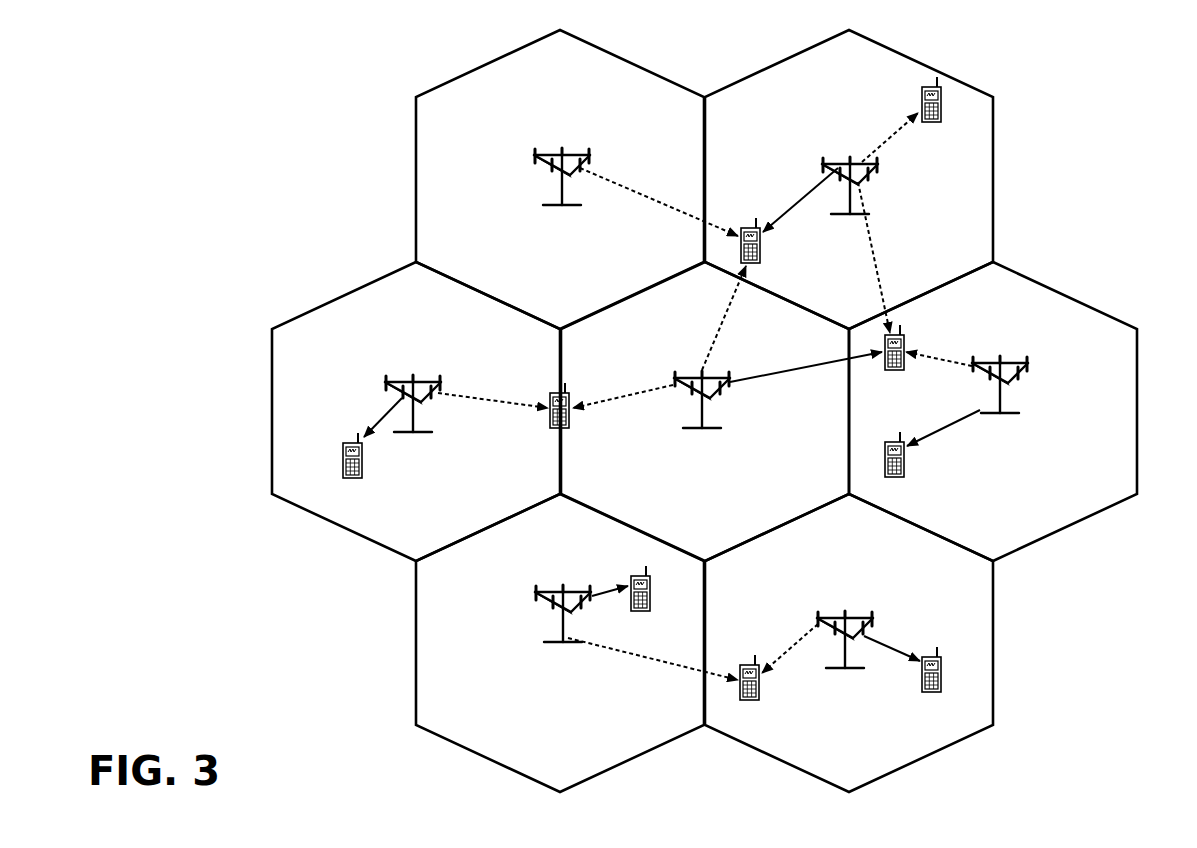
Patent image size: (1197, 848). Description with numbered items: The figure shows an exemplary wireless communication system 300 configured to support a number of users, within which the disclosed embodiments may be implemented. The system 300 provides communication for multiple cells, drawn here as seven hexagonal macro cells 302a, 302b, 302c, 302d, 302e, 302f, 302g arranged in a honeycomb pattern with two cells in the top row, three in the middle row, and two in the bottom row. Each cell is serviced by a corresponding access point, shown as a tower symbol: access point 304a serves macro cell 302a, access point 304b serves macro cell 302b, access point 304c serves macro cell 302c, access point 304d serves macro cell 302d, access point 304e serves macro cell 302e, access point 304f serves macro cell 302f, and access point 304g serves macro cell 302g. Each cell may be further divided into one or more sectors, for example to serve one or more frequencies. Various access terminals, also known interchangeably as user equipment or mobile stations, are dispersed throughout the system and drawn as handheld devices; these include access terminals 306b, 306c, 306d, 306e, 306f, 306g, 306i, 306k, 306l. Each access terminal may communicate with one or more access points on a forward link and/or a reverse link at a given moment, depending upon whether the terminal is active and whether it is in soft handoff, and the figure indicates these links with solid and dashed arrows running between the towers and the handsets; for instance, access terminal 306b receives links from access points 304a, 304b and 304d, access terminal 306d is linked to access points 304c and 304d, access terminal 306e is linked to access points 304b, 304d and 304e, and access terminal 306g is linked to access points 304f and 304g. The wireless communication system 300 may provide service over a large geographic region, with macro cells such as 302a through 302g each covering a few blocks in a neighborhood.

The wireless communication system 300 is at (1108, 208).
The macro cell 302a is at (490, 63).
The macro cell 302b is at (935, 51).
The macro cell 302c is at (344, 296).
The macro cell 302d is at (726, 301).
The macro cell 302e is at (1072, 298).
The macro cell 302f is at (414, 651).
The macro cell 302g is at (995, 651).
The access point 304a is at (532, 158).
The access point 304b is at (822, 165).
The access point 304c is at (397, 381).
The access point 304d is at (673, 378).
The access point 304e is at (1030, 366).
The access point 304f is at (535, 592).
The access point 304g is at (818, 614).
The access terminal 306b is at (743, 228).
The access terminal 306c is at (343, 460).
The access terminal 306d is at (550, 402).
The access terminal 306e is at (905, 351).
The access terminal 306f is at (634, 576).
The access terminal 306g is at (744, 665).
The access terminal 306i is at (922, 96).
The access terminal 306k is at (891, 442).
The access terminal 306l is at (925, 657).